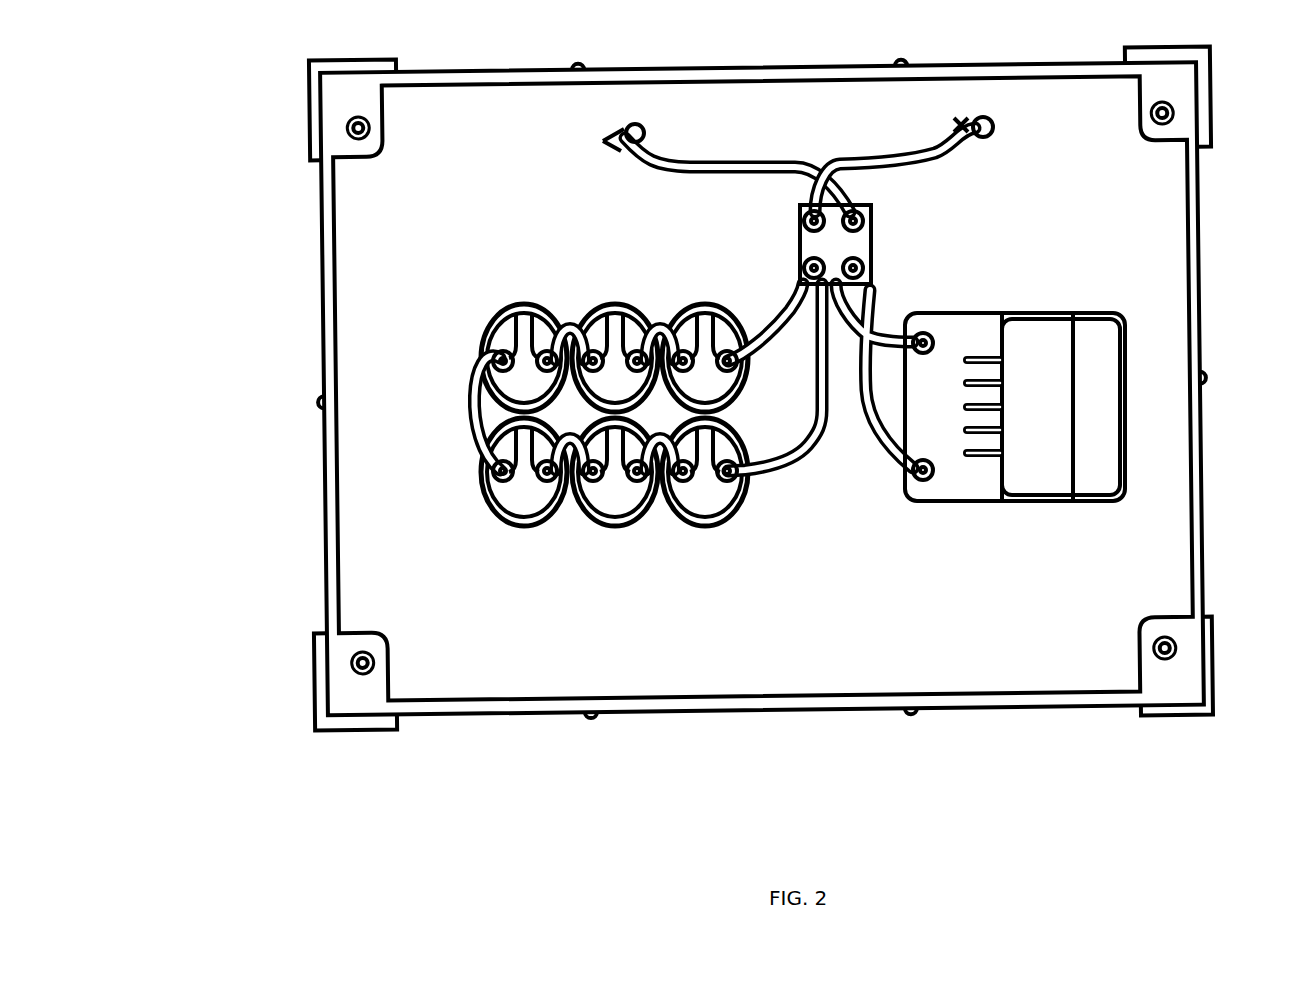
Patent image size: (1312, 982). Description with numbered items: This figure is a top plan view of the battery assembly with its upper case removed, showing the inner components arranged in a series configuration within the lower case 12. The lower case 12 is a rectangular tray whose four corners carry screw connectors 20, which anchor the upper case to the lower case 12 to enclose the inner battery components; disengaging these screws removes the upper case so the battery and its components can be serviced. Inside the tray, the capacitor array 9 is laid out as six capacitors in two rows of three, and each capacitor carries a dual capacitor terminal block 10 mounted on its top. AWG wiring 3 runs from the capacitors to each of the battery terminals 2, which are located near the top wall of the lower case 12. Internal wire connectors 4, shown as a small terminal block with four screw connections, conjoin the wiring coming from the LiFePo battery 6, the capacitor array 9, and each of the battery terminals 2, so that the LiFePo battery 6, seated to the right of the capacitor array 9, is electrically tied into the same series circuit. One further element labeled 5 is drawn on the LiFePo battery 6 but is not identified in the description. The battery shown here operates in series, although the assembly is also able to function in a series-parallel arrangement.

The battery terminals 2 is at (995, 125).
The AWG wiring 3 is at (780, 463).
The internal wire connectors 4 is at (862, 222).
The ballast cover 5 is at (1045, 337).
The LiFePo battery 6 is at (975, 473).
The capacitor array 9 is at (522, 512).
The dual capacitor terminal block 10 is at (681, 478).
The lower case 12 is at (325, 225).
The screw connectors 20 is at (352, 126).